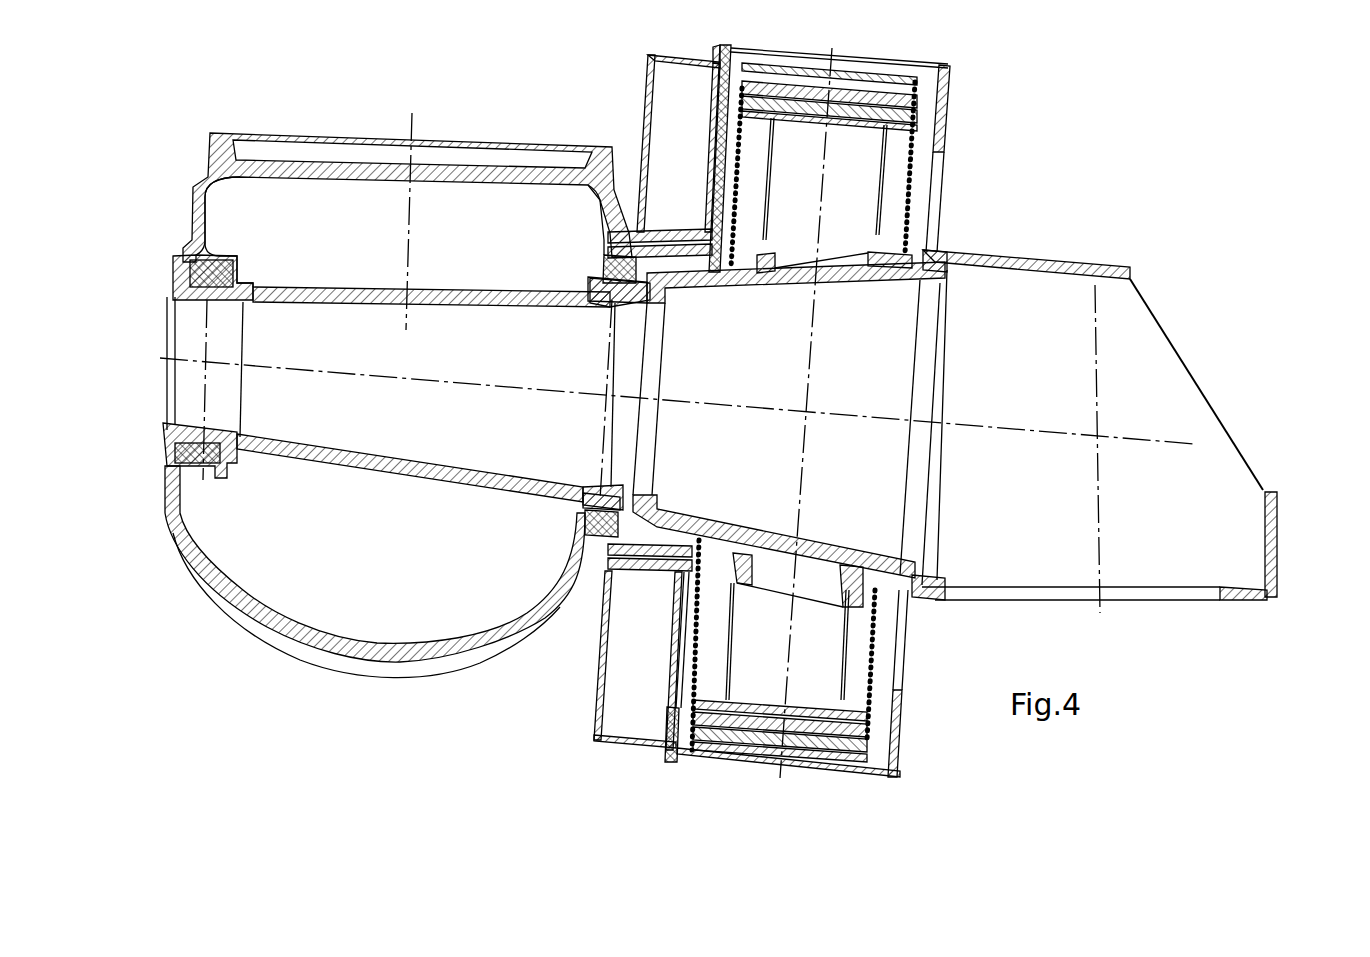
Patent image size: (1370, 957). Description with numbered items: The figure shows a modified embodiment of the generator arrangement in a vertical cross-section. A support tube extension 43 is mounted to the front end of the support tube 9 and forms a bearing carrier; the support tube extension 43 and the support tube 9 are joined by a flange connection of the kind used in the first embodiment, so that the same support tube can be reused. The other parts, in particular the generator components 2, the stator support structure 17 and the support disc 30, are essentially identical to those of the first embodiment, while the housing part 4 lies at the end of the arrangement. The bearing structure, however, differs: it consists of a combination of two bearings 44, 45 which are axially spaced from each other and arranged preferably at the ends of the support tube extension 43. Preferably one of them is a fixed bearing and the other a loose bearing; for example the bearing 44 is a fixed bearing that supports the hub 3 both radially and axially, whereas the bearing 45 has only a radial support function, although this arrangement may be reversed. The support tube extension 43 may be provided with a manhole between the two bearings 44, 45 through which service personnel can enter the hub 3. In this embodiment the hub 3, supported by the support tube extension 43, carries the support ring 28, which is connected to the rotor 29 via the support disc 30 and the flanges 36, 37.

The generator components 2 is at (946, 50).
The hub 3 is at (204, 136).
The housing part 4 is at (1043, 262).
The support tube 9 is at (762, 283).
The stator support structure 17 is at (892, 186).
The support ring 28 is at (665, 230).
The rotor 29 is at (802, 70).
The support disc 30 is at (628, 100).
The flange 36 is at (726, 46).
The flange 37 is at (737, 45).
The support tube extension 43 is at (478, 305).
The bearing 44 is at (264, 256).
The bearing 45 is at (580, 264).